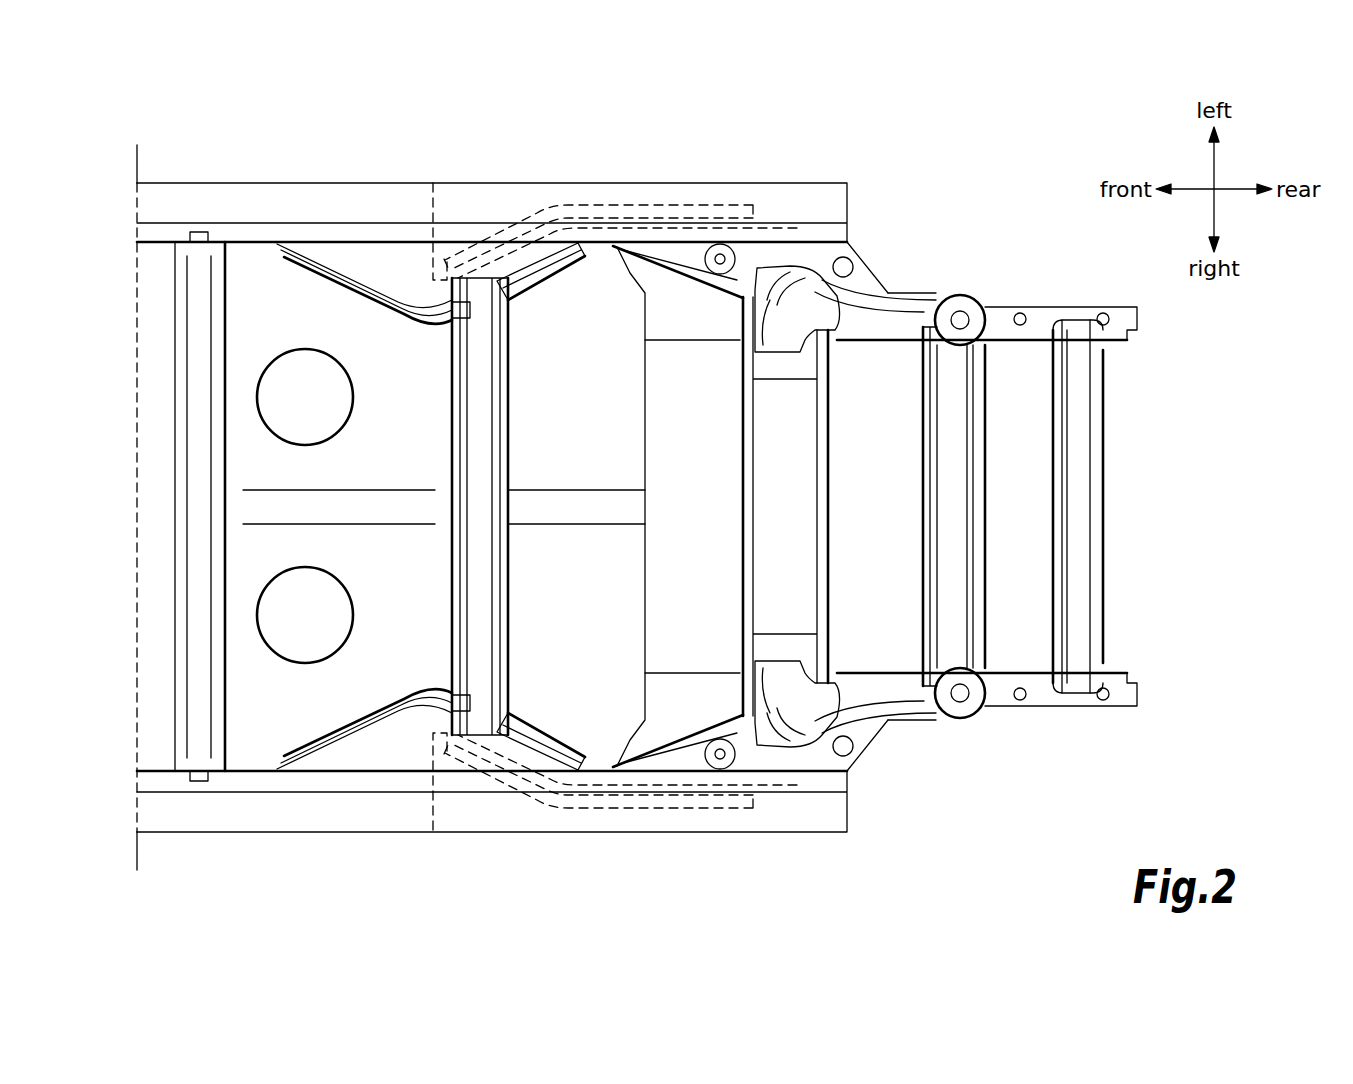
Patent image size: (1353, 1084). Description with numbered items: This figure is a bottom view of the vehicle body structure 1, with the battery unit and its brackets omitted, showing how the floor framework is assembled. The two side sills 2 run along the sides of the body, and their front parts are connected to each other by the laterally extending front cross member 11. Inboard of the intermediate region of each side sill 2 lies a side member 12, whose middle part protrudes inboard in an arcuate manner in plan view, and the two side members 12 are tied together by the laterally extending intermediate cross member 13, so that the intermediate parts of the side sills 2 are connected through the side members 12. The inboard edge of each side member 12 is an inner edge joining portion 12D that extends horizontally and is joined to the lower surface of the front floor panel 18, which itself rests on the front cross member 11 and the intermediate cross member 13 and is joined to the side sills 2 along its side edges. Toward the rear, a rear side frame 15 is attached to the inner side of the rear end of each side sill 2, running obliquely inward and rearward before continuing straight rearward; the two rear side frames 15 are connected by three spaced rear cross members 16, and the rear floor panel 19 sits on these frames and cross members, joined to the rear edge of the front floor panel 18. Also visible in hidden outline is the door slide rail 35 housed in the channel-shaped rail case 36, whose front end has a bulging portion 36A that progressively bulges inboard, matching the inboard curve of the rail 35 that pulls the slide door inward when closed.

The vehicle body frame structure 1 is at (899, 168).
The side sill 2 is at (250, 183).
The front cross member 11 is at (185, 402).
The side member 12 is at (385, 258).
The inner edge joining portion 12D is at (310, 270).
The intermediate cross member 13 is at (470, 445).
The rear side frame 15 is at (1045, 308).
The rear cross member 16 is at (807, 520).
The front floor panel 18 is at (255, 475).
The rear floor panel 19 is at (888, 360).
The door slide rail 35 is at (700, 205).
The rail case 36 is at (433, 205).
The bulging portion 36A is at (452, 302).